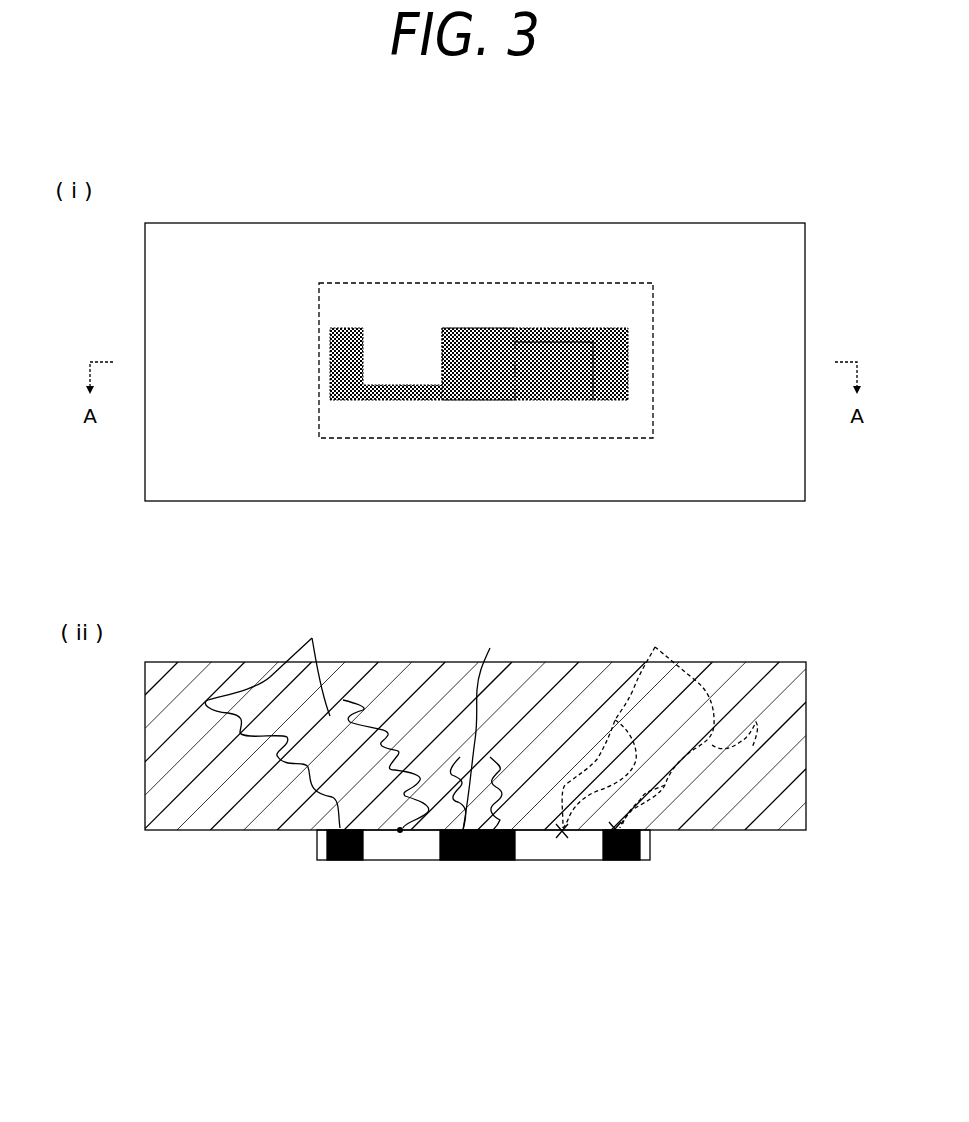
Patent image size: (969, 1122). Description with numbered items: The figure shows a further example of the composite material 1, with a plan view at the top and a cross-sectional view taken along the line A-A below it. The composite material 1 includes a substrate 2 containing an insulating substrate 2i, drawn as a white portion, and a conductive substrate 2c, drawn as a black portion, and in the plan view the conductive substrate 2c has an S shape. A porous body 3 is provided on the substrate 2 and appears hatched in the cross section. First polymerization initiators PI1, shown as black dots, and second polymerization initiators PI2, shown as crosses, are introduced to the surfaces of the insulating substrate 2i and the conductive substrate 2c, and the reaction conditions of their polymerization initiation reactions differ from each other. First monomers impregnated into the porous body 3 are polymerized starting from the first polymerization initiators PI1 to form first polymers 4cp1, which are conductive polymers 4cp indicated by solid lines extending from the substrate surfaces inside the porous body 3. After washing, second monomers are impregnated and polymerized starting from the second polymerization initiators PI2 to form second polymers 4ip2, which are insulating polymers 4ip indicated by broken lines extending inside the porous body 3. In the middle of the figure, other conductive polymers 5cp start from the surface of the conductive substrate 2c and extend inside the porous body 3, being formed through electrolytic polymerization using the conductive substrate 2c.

The composite material 1 is at (776, 169).
The porous body 3 is at (783, 308).
The substrate 2 is at (485, 560).
The conductive substrate 2c is at (348, 337).
The insulating substrate 2i is at (537, 295).
The conductive polymers 4cp is at (316, 723).
The first polymers 4cp1 is at (272, 733).
The other conductive polymers 5cp is at (482, 727).
The insulating polymers 4ip is at (659, 725).
The second polymers 4ip2 is at (608, 737).
The first polymerization initiators PI1 is at (357, 813).
The second polymerization initiators PI2 is at (612, 832).